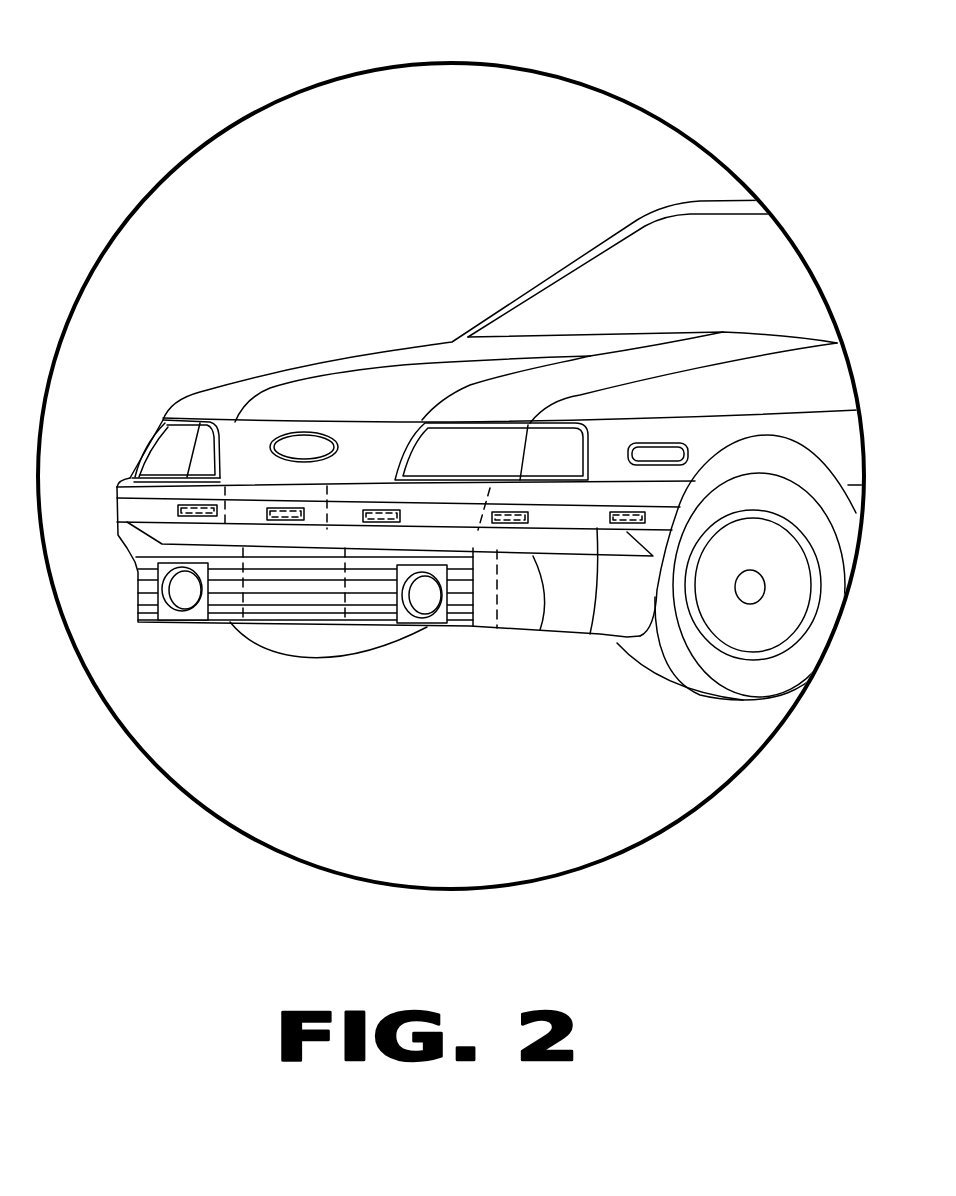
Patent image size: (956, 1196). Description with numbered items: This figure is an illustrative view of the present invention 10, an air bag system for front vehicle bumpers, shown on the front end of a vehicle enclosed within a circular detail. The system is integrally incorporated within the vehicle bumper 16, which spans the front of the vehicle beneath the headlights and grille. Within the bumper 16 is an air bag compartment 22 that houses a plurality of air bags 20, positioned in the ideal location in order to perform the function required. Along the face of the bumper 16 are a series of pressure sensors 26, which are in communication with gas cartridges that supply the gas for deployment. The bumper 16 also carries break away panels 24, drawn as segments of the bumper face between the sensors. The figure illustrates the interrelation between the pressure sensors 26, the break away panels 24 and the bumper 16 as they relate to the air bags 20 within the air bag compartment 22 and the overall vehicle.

The air bag system for front vehicle bumpers 10 is at (498, 148).
The vehicle bumper 16 is at (130, 562).
The air bags 20 is at (590, 634).
The air bag compartment 22 is at (540, 630).
The break away panels 24 is at (518, 500).
The pressure sensors 26 is at (633, 515).